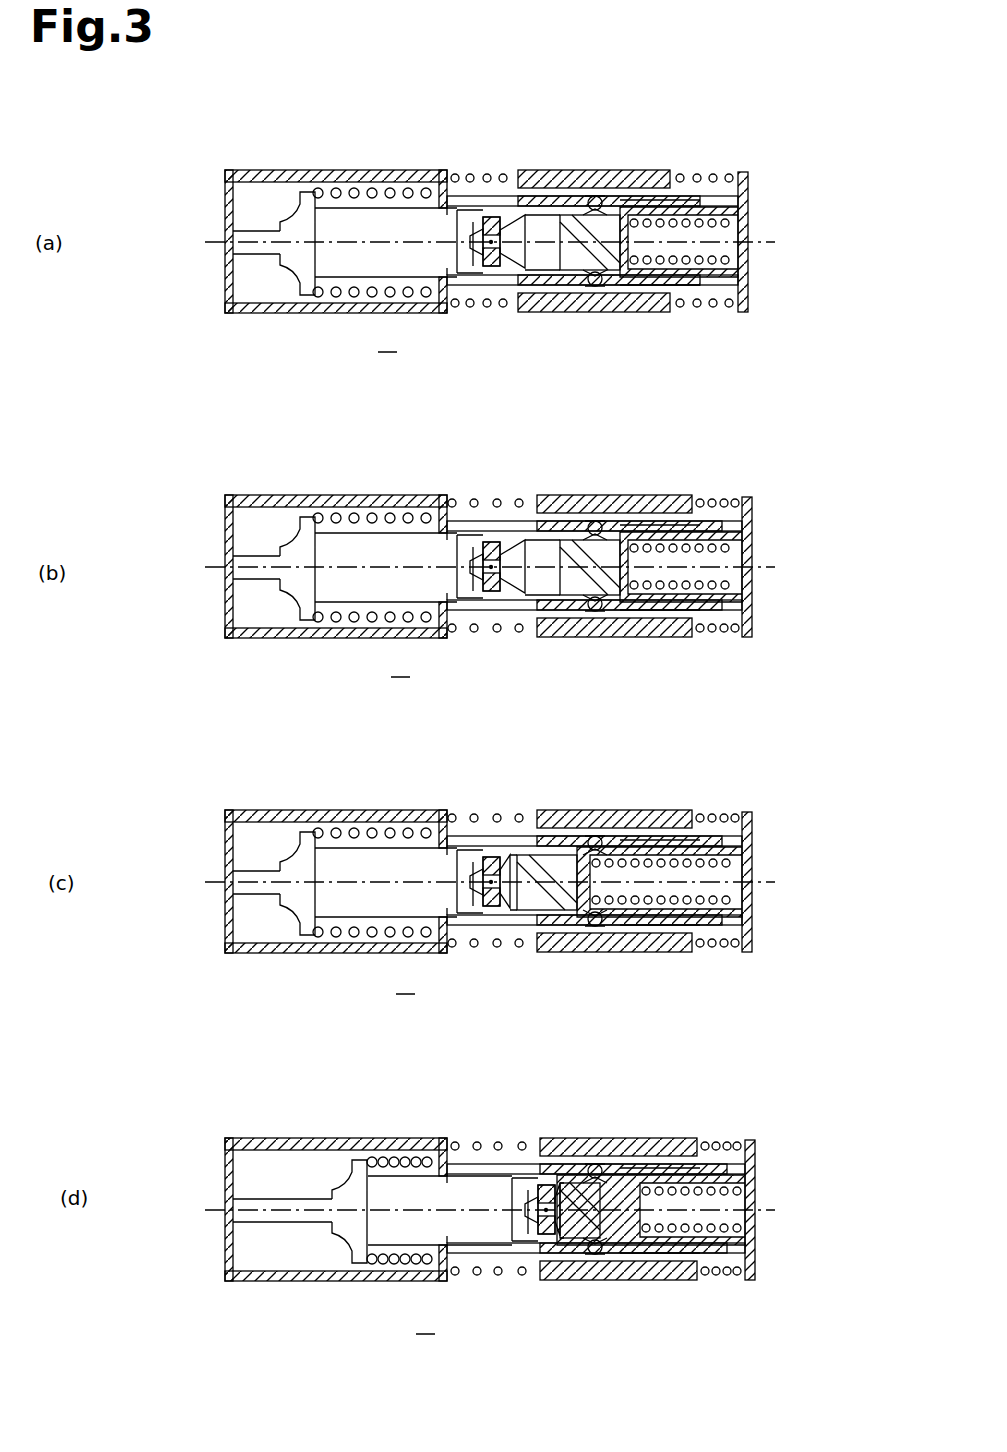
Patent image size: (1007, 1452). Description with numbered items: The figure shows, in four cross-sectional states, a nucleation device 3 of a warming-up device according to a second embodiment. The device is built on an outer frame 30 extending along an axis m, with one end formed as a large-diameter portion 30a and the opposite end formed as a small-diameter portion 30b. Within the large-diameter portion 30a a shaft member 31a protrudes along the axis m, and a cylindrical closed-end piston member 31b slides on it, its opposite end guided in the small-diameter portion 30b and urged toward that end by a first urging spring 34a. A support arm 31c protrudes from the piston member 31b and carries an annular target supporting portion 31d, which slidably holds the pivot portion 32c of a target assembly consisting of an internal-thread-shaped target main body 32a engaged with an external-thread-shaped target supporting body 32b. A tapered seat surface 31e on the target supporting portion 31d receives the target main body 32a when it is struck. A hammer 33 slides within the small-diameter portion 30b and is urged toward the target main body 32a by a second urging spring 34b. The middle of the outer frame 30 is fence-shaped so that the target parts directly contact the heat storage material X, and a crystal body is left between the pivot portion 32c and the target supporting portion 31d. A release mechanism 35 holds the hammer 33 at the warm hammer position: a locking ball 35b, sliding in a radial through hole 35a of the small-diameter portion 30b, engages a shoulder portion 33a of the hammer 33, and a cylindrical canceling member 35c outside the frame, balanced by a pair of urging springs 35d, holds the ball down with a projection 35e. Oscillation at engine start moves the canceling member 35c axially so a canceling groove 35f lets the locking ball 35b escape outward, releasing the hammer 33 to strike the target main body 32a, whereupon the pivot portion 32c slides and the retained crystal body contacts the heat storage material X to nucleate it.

The nucleation device 3 is at (525, 100).
The outer frame 30 is at (285, 168).
The large-diameter portion 30a is at (400, 182).
The small-diameter portion 30b is at (715, 207).
The shaft member 31a is at (258, 255).
The piston member 31b is at (300, 296).
The support arm 31c is at (462, 275).
The target supporting portion 31d is at (478, 275).
The seat surface 31e is at (522, 215).
The target main body 32a is at (518, 225).
The target supporting body 32b is at (490, 217).
The pivot portion 32c is at (492, 236).
The hammer 33 is at (575, 215).
The shoulder portion 33a is at (605, 210).
The first urging spring 34a is at (353, 188).
The second urging spring 34b is at (745, 180).
The release mechanism 35 is at (645, 170).
The through hole 35a is at (595, 196).
The locking ball 35b is at (585, 285).
The canceling member 35c is at (580, 170).
The urging springs 35d is at (470, 196).
The projection 35e is at (630, 278).
The canceling groove 35f is at (640, 222).
The axis m is at (770, 242).
The heat storage material x is at (406, 832).